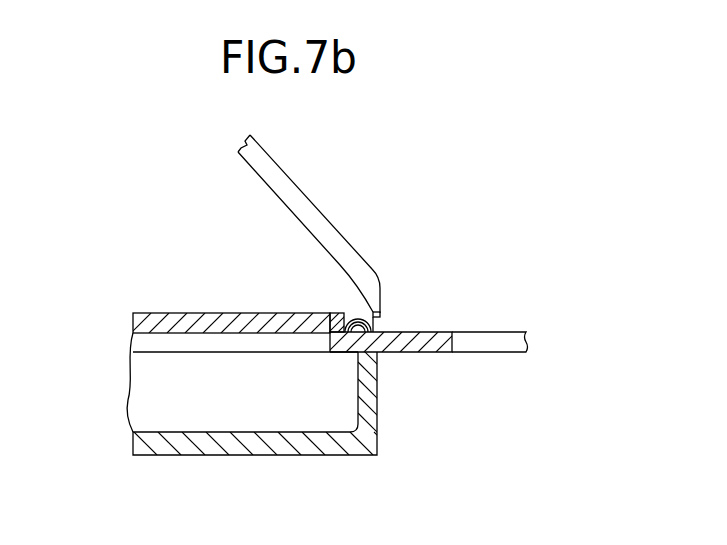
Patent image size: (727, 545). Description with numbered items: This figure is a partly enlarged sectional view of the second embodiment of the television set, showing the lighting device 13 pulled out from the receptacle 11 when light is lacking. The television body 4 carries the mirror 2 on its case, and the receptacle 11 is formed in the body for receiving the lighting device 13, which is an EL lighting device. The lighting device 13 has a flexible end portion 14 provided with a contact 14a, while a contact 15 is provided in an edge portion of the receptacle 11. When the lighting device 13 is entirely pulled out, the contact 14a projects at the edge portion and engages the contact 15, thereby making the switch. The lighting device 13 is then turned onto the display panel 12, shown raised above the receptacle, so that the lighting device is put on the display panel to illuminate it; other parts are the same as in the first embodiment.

The mirror 2 is at (180, 318).
The receptacle 11 is at (138, 344).
The display panel 12 is at (307, 212).
The television body 4 is at (367, 440).
The contact 14a is at (362, 352).
The flexible end portion 14 is at (416, 346).
The lighting device 13 is at (487, 346).
The contact 15 is at (377, 321).